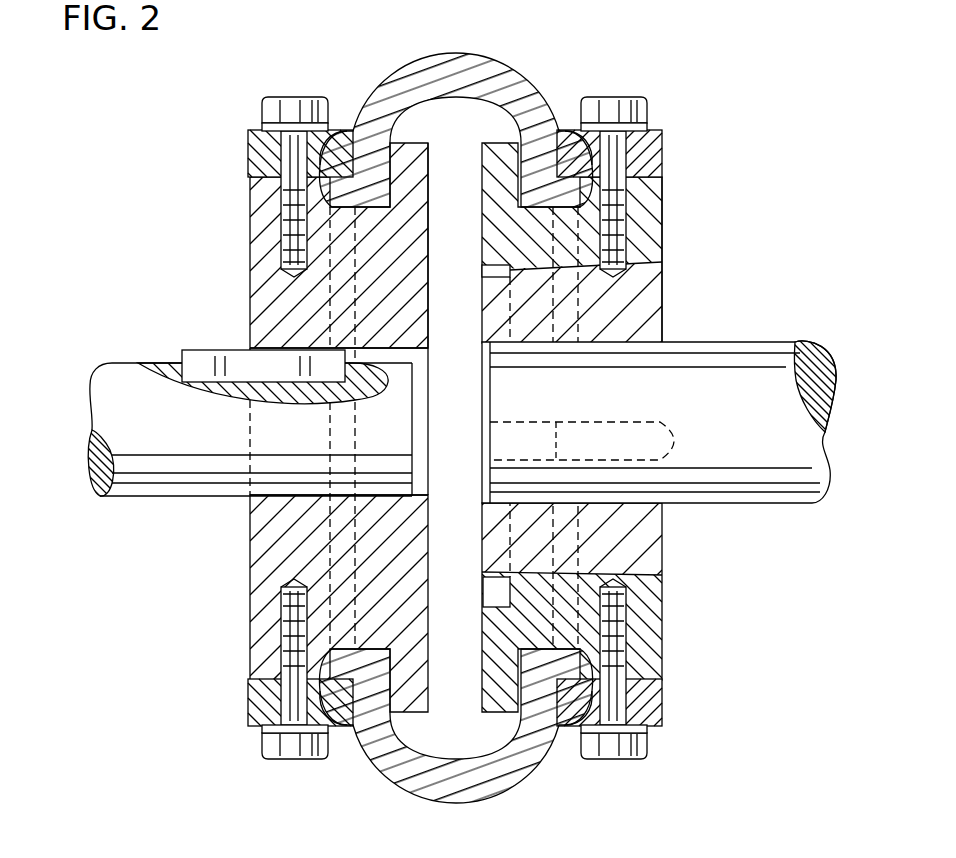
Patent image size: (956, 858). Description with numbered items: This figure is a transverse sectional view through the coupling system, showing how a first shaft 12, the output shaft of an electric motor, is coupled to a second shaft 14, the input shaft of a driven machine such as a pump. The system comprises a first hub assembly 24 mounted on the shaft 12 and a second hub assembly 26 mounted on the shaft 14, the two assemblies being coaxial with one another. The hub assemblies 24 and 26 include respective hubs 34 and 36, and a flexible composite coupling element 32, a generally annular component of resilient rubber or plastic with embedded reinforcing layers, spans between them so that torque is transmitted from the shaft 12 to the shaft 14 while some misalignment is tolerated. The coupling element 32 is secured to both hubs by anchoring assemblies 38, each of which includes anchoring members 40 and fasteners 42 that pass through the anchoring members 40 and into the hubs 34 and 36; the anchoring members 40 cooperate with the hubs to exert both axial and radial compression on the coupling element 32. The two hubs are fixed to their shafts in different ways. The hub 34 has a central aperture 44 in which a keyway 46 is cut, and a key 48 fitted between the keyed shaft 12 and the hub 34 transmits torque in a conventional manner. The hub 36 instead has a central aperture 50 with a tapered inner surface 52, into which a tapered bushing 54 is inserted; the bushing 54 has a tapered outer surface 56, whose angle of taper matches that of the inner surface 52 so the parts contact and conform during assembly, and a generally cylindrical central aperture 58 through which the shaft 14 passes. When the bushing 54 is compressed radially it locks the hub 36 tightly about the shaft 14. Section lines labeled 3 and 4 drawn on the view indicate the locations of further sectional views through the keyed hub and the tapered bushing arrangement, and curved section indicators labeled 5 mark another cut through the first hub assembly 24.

The section line 3- 3 is at (158, 70).
The section line 4- 4 is at (712, 70).
The section line 5- 5 is at (212, 215).
The first shaft 12 is at (105, 400).
The second shaft 14 is at (830, 447).
The first hub assembly 24 is at (305, 500).
The second hub assembly 26 is at (606, 471).
The coupling element 32 is at (470, 62).
The hub 34 is at (257, 283).
The hub 36 is at (655, 218).
The anchoring assembly 38 is at (340, 80).
The anchoring member 40 is at (258, 152).
The fastener 42 is at (296, 98).
The central aperture 44 is at (252, 505).
The keyway 46 is at (405, 350).
The key 48 is at (205, 352).
The central aperture 50 is at (655, 248).
The tapered inner surface 52 is at (655, 268).
The tapered bushing 54 is at (655, 322).
The tapered outer surface 56 is at (640, 590).
The central aperture 58 is at (678, 503).